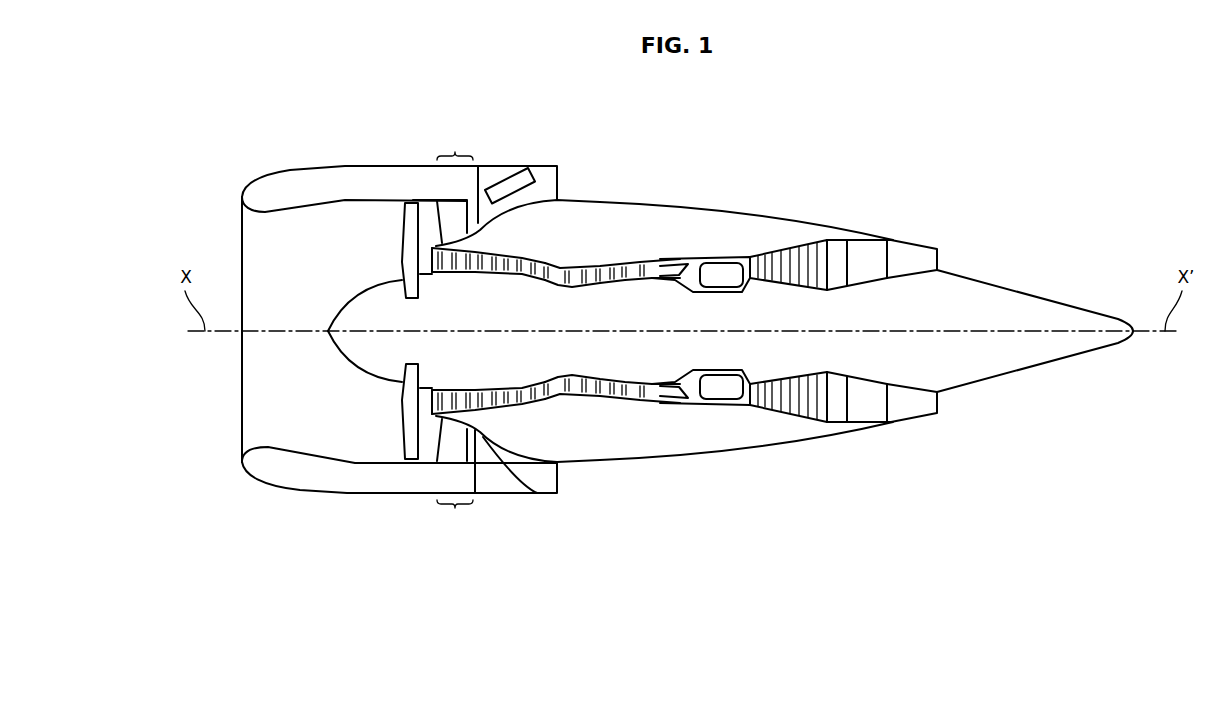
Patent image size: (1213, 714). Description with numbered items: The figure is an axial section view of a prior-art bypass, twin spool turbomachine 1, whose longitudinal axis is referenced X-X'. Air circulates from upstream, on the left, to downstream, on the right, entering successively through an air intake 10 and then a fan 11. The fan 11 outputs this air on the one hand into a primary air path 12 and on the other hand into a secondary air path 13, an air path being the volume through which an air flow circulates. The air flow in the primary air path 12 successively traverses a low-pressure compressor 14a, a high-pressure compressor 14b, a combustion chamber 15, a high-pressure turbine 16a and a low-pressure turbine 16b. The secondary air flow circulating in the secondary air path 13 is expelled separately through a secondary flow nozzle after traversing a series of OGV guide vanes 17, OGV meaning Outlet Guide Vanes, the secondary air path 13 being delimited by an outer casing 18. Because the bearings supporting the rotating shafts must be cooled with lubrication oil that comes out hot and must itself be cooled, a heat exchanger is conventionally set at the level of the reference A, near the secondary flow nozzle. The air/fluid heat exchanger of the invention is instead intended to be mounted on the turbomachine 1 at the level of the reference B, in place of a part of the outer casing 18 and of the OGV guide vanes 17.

The bypass twin spool turbomachine 1 is at (694, 130).
The air intake 10 is at (399, 329).
The fan 11 is at (410, 415).
The primary air path 12 is at (426, 261).
The secondary air path 13 is at (426, 223).
The low-pressure compressor 14a is at (505, 398).
The high-pressure compressor 14b is at (627, 272).
The combustion chamber 15 is at (724, 271).
The high-pressure turbine 16a is at (812, 254).
The low-pressure turbine 16b is at (870, 258).
The OGV guide vanes 17 is at (455, 218).
The outer casing 18 is at (450, 185).
The reference A is at (510, 187).
The reference B is at (455, 331).